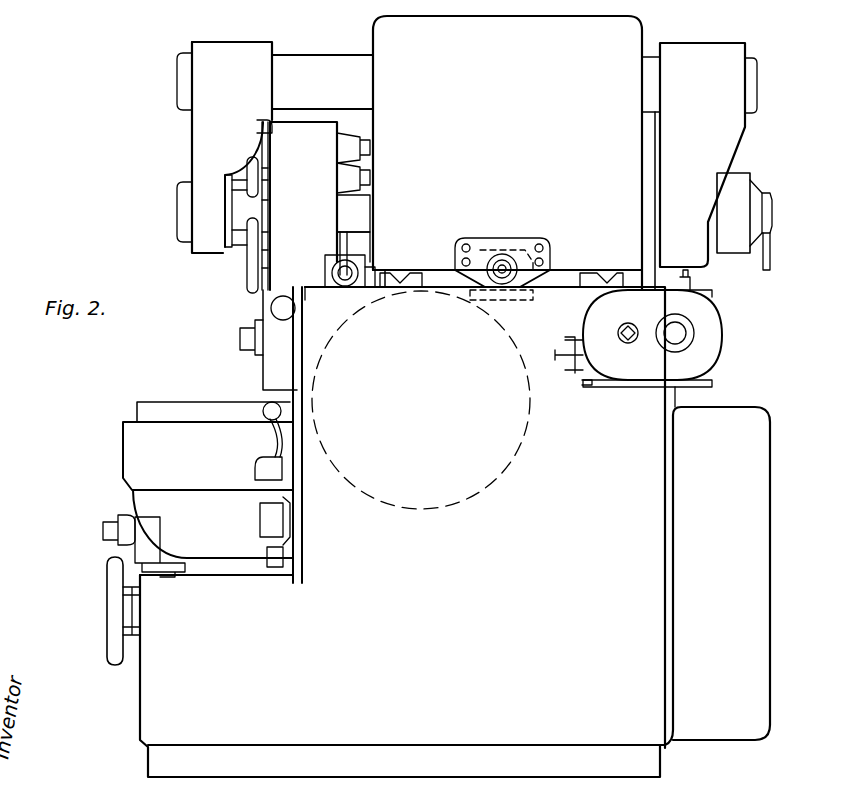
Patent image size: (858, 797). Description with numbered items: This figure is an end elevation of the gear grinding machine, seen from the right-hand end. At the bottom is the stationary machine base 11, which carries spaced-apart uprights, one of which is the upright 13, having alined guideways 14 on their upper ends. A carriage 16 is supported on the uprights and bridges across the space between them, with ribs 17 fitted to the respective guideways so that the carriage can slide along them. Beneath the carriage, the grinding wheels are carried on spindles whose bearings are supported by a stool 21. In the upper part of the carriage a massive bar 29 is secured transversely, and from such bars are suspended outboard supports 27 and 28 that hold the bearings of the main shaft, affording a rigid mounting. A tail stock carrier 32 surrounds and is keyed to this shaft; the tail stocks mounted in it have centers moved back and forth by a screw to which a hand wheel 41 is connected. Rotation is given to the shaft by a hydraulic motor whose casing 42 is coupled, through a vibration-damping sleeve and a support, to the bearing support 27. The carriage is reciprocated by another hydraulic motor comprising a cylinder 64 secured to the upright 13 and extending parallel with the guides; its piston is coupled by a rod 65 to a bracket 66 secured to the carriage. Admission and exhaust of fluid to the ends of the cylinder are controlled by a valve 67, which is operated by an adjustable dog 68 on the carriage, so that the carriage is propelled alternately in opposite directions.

The stationary machine base 11 is at (603, 703).
The upright 13 is at (640, 467).
The guideway 14 is at (391, 289).
The carriage 16 is at (628, 47).
The rib 17 is at (400, 280).
The stool 21 is at (160, 502).
The outboard support 27 is at (725, 140).
The outboard support 28 is at (193, 133).
The massive bar 29 is at (333, 57).
The tail stock carrier 32 is at (313, 137).
The hand wheel 41 is at (262, 276).
The casing 42 is at (740, 200).
The cylinder 64 is at (523, 255).
The rod 65 is at (504, 263).
The bracket 66 is at (488, 240).
The valve 67 is at (330, 270).
The adjustable dog 68 is at (342, 252).